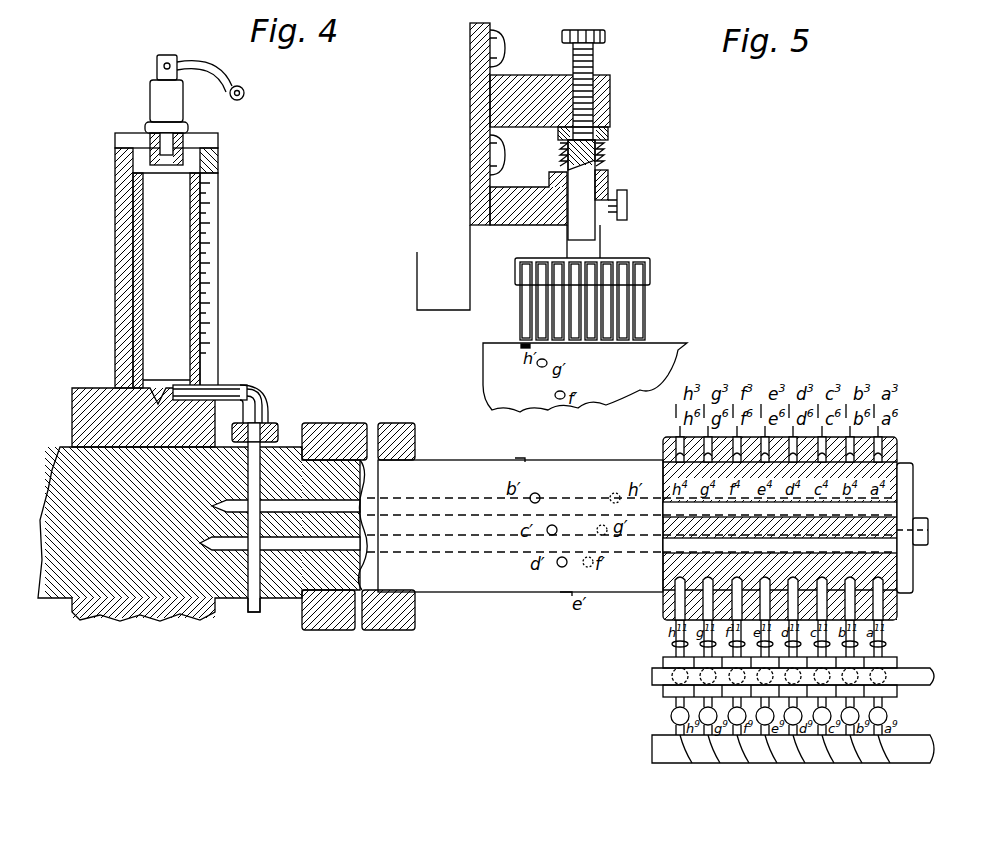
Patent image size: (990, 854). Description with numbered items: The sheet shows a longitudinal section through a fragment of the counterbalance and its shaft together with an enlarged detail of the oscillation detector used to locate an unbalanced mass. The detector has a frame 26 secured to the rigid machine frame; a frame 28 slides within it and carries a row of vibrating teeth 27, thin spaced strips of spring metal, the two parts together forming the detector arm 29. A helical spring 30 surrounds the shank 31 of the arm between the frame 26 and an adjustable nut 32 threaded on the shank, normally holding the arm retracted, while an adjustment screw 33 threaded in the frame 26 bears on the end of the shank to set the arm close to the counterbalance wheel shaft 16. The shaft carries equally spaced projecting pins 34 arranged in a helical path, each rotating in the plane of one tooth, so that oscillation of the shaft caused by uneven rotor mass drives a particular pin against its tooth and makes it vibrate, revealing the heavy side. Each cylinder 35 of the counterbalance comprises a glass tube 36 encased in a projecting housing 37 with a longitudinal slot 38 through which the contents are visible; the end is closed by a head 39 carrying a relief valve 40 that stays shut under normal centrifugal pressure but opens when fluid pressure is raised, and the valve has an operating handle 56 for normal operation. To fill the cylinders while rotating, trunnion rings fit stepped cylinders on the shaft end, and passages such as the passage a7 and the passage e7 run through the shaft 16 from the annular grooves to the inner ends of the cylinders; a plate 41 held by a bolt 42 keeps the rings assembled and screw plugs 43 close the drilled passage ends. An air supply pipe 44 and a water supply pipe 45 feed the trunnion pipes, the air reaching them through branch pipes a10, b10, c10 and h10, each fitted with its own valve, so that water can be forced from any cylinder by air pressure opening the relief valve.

In FIG. 5, the counterbalance wheel shaft 16 is at (648, 354).
In FIG. 5, the frame 26 is at (535, 70).
In FIG. 5, the vibrating teeth 27 is at (522, 306).
In FIG. 5, the frame 28 is at (600, 250).
In FIG. 5, the detector arm 29 is at (522, 262).
In FIG. 5, the helical spring 30 is at (604, 154).
In FIG. 5, the shank 31 is at (583, 183).
In FIG. 5, the adjustable nut 32 is at (608, 134).
In FIG. 5, the adjustment screw 33 is at (593, 78).
In FIG. 5, the projecting pins 34 is at (555, 395).
In FIG. 4, the cylinder 35 is at (140, 346).
In FIG. 4, the glass tube 36 is at (200, 225).
In FIG. 4, the projecting housing 37 is at (115, 212).
In FIG. 4, the longitudinal slot 38 is at (210, 288).
In FIG. 4, the head 39 is at (194, 148).
In FIG. 4, the relief valve 40 is at (150, 101).
In FIG. 4, the plate 41 is at (226, 508).
In FIG. 5, the plate 41 is at (900, 468).
In FIG. 4, the bolt 42 is at (250, 604).
In FIG. 5, the bolt 42 is at (915, 525).
In FIG. 5, the screw plugs 43 is at (900, 500).
In FIG. 5, the air supply pipe 44 is at (920, 672).
In FIG. 5, the water supply pipe 45 is at (922, 745).
In FIG. 4, the operating handle 56 is at (237, 86).
In FIG. 4, the passage e7 is at (258, 408).
In FIG. 5, the passage e7 is at (520, 498).
In FIG. 4, the passage a7 is at (292, 560).
In FIG. 5, the passage a7 is at (490, 552).
In FIG. 5, the pipe a10 is at (888, 660).
In FIG. 5, the pipe h10 is at (664, 670).
In FIG. 5, the pipe b10 is at (858, 690).
In FIG. 5, the pipe c10 is at (880, 700).